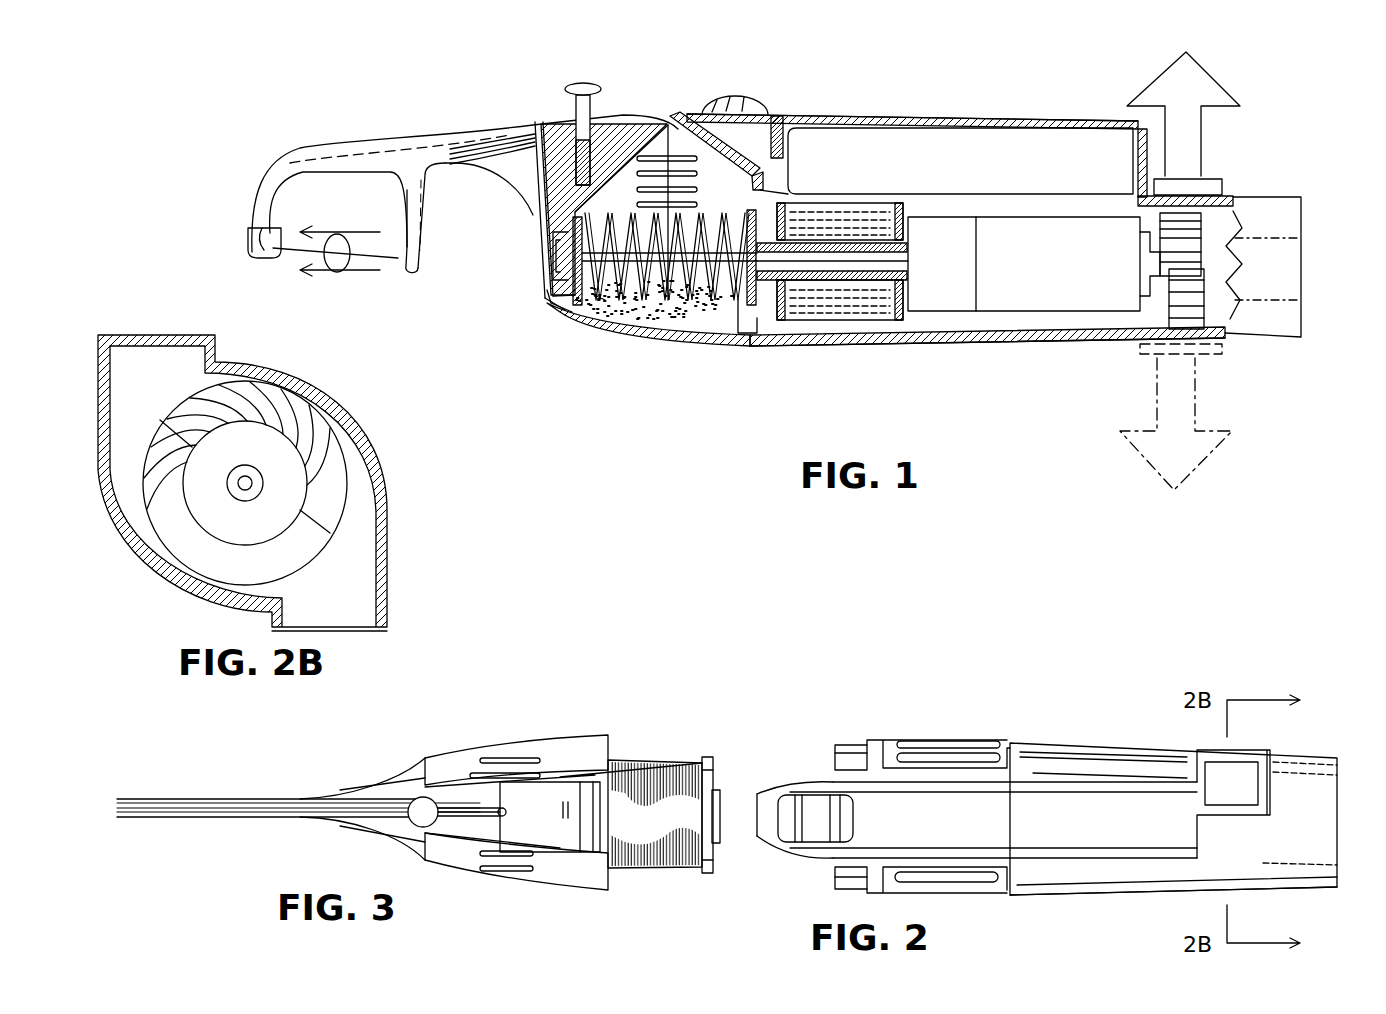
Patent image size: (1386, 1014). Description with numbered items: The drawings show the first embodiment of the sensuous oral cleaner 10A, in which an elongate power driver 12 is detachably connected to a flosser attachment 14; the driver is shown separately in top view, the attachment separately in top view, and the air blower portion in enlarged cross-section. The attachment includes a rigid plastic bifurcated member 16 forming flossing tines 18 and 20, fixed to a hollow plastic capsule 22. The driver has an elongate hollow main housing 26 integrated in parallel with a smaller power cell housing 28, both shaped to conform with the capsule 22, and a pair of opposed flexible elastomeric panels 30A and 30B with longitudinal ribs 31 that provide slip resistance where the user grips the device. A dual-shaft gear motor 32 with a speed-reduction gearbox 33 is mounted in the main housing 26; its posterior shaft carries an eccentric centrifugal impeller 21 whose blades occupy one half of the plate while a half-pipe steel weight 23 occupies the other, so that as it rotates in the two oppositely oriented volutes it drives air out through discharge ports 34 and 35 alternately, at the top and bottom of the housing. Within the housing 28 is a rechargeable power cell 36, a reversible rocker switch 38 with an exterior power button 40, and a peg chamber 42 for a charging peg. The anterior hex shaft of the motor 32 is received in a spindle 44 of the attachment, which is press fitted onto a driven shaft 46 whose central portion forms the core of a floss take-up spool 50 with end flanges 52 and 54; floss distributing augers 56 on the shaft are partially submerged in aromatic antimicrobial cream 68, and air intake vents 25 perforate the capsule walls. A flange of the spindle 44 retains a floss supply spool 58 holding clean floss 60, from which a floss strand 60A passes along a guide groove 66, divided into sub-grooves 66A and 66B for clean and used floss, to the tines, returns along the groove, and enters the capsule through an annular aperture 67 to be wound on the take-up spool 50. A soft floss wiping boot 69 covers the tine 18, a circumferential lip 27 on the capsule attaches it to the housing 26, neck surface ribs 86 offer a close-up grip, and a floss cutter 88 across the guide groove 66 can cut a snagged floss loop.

In FIG. 1, the sensuous oral cleaner 10A is at (1272, 103).
In FIG. 1, the power driver 12 is at (889, 106).
In FIG. 2, the power driver 12 is at (1115, 737).
In FIG. 1, the flosser attachment 14 is at (540, 312).
In FIG. 3, the flosser attachment 14 is at (574, 725).
In FIG. 1, the bifurcated member 16 is at (324, 152).
In FIG. 3, the bifurcated member 16 is at (217, 797).
In FIG. 1, the flossing tine 18 is at (262, 226).
In FIG. 1, the flossing tine 20 is at (424, 229).
In FIG. 1, the eccentric centrifugal impeller 21 is at (1204, 236).
In FIG. 2B, the eccentric centrifugal impeller 21 is at (180, 403).
In FIG. 1, the capsule 22 is at (630, 334).
In FIG. 3, the capsule 22 is at (545, 887).
In FIG. 1, the steel weight 23 is at (1194, 297).
In FIG. 2B, the steel weight 23 is at (315, 540).
In FIG. 1, the air intake vents 25 is at (667, 228).
In FIG. 1, the main housing 26 is at (1084, 350).
In FIG. 2B, the main housing 26 is at (378, 425).
In FIG. 2, the main housing 26 is at (1095, 890).
In FIG. 1, the circumferential lip 27 is at (772, 348).
In FIG. 1, the power cell housing 28 is at (1033, 119).
In FIG. 2, the power cell housing 28 is at (1013, 804).
In FIG. 2, the elastomeric panel 30A is at (1005, 746).
In FIG. 2, the elastomeric panel 30B is at (1003, 893).
In FIG. 2, the longitudinal ribs 31 is at (950, 748).
In FIG. 1, the dual-shaft gear motor 32 is at (1034, 264).
In FIG. 1, the speed-reduction gearbox 33 is at (951, 236).
In FIG. 1, the discharge port 34 is at (1204, 178).
In FIG. 2B, the discharge port 34 is at (122, 334).
In FIG. 2, the discharge port 34 is at (1272, 792).
In FIG. 1, the discharge port 35 is at (1209, 356).
In FIG. 2B, the discharge port 35 is at (358, 632).
In FIG. 1, the rechargeable power cell 36 is at (990, 159).
In FIG. 1, the rocker switch 38 is at (772, 140).
In FIG. 1, the power button 40 is at (752, 96).
In FIG. 2, the power button 40 is at (842, 820).
In FIG. 1, the peg chamber 42 is at (1265, 288).
In FIG. 1, the spindle 44 is at (910, 272).
In FIG. 3, the spindle 44 is at (722, 830).
In FIG. 1, the driven shaft 46 is at (540, 258).
In FIG. 1, the floss take-up spool 50 is at (757, 240).
In FIG. 1, the end flange 52 is at (562, 312).
In FIG. 1, the end flange 54 is at (740, 312).
In FIG. 1, the floss distributing augers 56 is at (600, 310).
In FIG. 1, the floss supply spool 58 is at (898, 204).
In FIG. 3, the floss supply spool 58 is at (716, 768).
In FIG. 2, the floss supply spool 58 is at (808, 817).
In FIG. 1, the clean floss 60 is at (835, 322).
In FIG. 3, the clean floss 60 is at (660, 868).
In FIG. 3, the floss strand 60A is at (187, 820).
In FIG. 1, the guide groove 66 is at (637, 120).
In FIG. 3, the guide groove 66 is at (460, 832).
In FIG. 3, the sub-groove 66A is at (255, 800).
In FIG. 3, the sub-groove 66B is at (258, 820).
In FIG. 3, the annular aperture 67 is at (508, 815).
In FIG. 1, the aromatic antimicrobial cream 68 is at (700, 328).
In FIG. 1, the floss wiping boot 69 is at (252, 256).
In FIG. 1, the neck surface ribs 86 is at (500, 170).
In FIG. 1, the floss cutter 88 is at (597, 86).